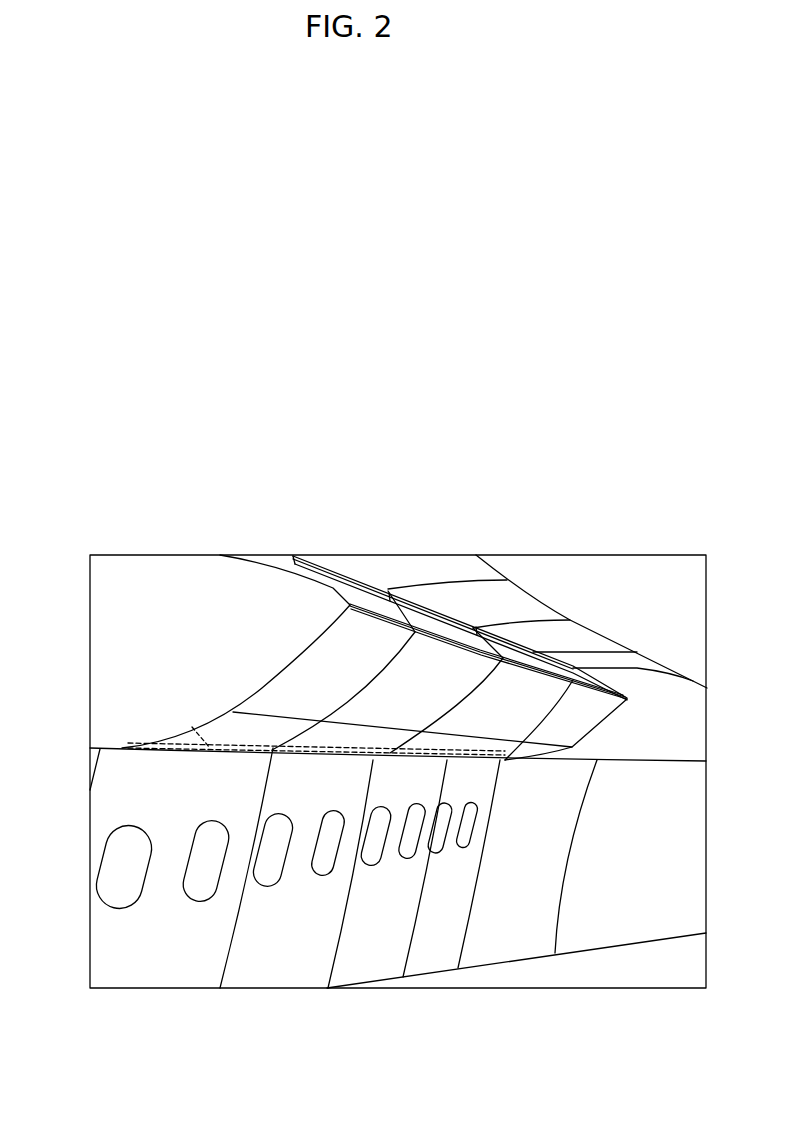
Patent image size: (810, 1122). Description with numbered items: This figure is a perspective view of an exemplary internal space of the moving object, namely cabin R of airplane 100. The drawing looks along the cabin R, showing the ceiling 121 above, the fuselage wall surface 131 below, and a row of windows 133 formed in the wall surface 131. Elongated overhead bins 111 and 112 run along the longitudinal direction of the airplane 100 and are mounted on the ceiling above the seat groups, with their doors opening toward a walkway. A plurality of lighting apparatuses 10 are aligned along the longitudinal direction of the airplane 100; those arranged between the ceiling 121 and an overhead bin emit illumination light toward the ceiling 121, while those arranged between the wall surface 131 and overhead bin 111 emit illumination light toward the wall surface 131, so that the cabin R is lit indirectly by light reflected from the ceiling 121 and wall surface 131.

The airplane 100 is at (698, 472).
The lighting apparatus 10 is at (315, 556).
The overhead bin 111 is at (157, 588).
The overhead bin 112 is at (664, 568).
The ceiling 121 is at (437, 572).
The wall surface 131 is at (103, 803).
The window 133 is at (110, 873).
The cabin R is at (668, 860).